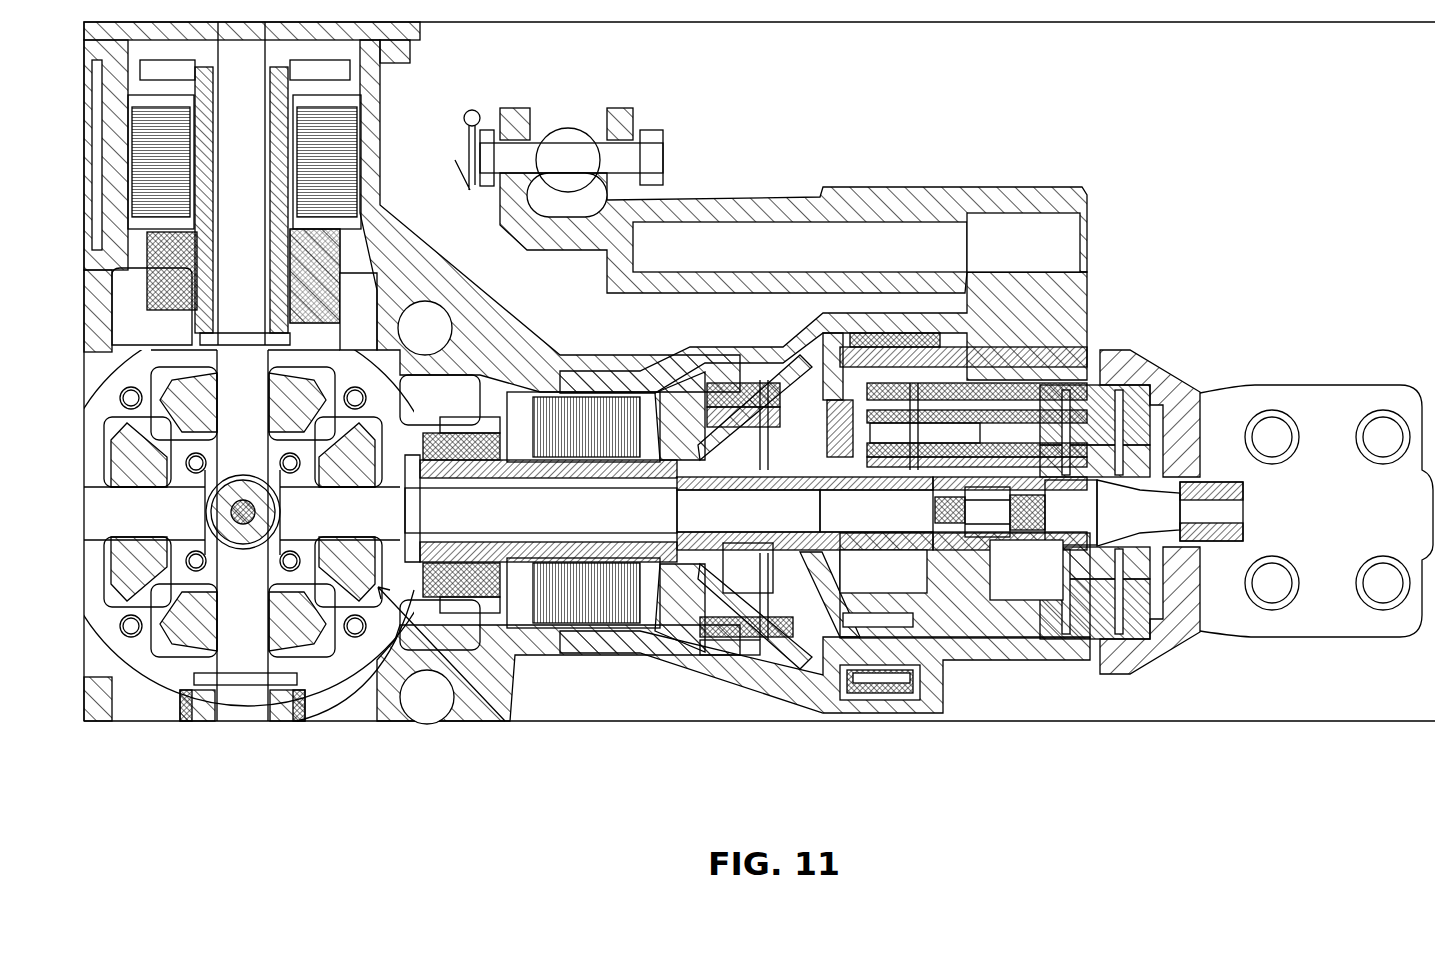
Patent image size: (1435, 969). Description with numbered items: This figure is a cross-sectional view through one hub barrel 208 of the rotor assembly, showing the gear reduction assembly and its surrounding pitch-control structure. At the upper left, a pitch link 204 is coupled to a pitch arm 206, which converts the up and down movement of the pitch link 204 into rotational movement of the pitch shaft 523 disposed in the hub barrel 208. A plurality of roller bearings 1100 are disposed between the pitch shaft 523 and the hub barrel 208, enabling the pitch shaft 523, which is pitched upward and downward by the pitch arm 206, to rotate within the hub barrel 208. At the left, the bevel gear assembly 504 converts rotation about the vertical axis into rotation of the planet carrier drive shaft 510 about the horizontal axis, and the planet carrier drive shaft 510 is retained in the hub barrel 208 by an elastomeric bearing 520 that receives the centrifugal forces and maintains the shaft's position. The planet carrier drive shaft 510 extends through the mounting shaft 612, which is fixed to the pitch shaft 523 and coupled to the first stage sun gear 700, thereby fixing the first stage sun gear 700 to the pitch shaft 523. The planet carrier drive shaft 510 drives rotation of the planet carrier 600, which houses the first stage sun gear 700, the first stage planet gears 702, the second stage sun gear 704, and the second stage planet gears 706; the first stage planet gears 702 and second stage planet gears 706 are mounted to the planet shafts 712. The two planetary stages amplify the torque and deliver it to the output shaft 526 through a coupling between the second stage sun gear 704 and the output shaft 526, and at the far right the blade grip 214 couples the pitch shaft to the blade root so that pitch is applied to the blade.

The pitch link 204 is at (652, 133).
The pitch arm 206 is at (673, 198).
The hub barrel 208 is at (573, 655).
The blade grip 214 is at (1313, 385).
The bevel gear assembly 504 is at (510, 683).
The planet carrier drive shaft 510 is at (643, 513).
The elastomeric bearing 520 is at (582, 400).
The pitch shaft 523 is at (703, 450).
The output shaft 526 is at (1243, 497).
The planet carrier 600 is at (945, 618).
The mounting shaft 612 is at (757, 473).
The first stage sun gear 700 is at (873, 553).
The first stage planet gears 702 is at (888, 388).
The second stage sun gear 704 is at (1010, 553).
The second stage planet gears 706 is at (1045, 390).
The planet shafts 712 is at (937, 388).
The roller bearings 1100 is at (880, 673).